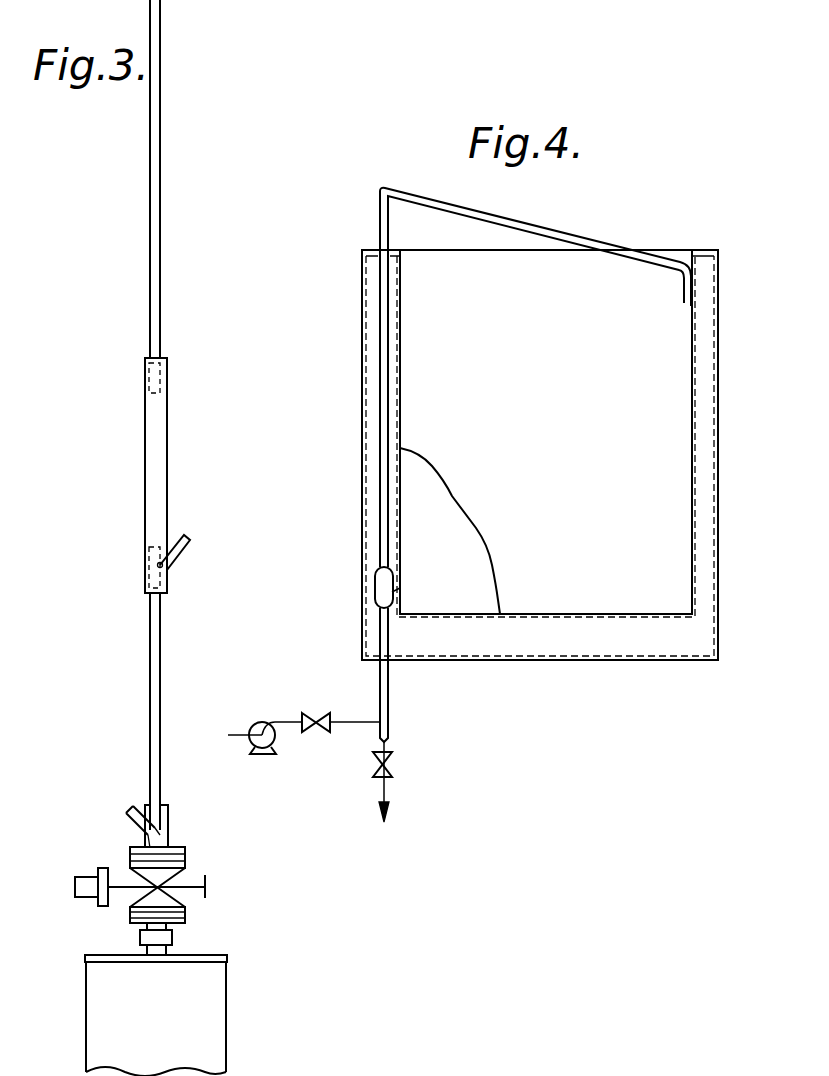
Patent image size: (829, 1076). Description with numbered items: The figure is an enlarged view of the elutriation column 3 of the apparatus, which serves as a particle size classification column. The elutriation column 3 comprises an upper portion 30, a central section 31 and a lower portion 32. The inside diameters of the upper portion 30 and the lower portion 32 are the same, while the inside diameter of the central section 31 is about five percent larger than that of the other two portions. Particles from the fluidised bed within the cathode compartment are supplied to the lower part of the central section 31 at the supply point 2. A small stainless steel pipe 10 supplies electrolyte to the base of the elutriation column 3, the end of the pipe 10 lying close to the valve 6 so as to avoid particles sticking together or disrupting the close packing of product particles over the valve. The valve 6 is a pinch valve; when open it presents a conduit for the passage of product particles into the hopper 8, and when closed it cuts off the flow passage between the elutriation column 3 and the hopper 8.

The particle supply point 2 is at (192, 535).
The elutriation column 3 is at (138, 317).
The valve 6 is at (118, 864).
The hopper 8 is at (198, 974).
The stainless steel pipe 10 is at (146, 836).
The upper portion 30 is at (149, 147).
The central section 31 is at (143, 456).
The lower portion 32 is at (150, 623).